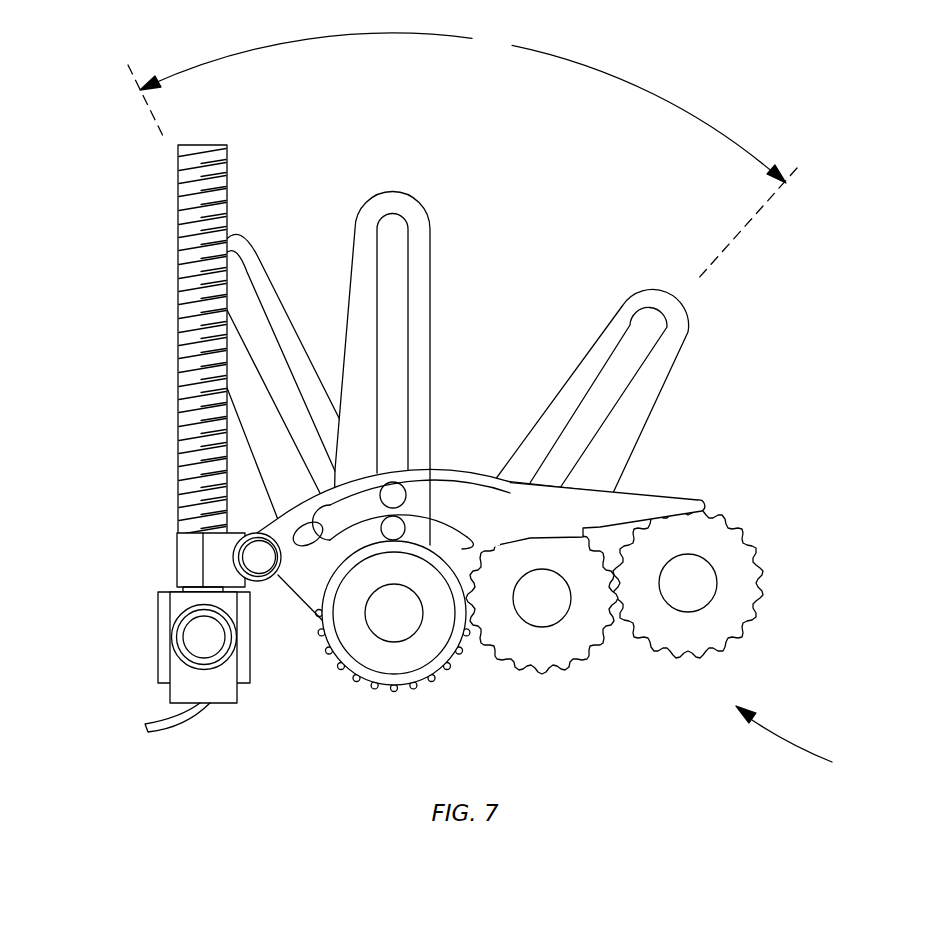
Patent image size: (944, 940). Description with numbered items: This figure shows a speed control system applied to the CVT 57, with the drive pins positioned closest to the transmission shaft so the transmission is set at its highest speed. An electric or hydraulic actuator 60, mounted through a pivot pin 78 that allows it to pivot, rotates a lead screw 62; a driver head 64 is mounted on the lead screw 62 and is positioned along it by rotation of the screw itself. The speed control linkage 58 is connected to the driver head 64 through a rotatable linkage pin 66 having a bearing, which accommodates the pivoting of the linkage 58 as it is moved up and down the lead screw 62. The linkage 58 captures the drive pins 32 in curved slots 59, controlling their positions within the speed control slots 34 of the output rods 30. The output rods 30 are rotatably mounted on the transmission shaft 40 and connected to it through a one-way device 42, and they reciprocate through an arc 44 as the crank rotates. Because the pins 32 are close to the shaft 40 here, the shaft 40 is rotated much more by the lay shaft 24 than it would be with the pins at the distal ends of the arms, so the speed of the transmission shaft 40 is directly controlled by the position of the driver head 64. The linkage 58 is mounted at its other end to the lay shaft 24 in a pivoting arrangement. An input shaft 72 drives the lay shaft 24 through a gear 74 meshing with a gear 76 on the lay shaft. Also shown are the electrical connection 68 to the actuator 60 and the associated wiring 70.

The lay shaft 24 is at (703, 593).
The output rod 30 is at (243, 248).
The drive pin 32 is at (393, 493).
The speed control slot 34 is at (248, 290).
The transmission shaft 40 is at (407, 617).
The one-way device 42 is at (362, 650).
The arc 44 is at (462, 153).
The CVT 57 is at (801, 740).
The speed control linkage 58 is at (603, 507).
The slot 59 is at (448, 497).
The actuator 60 is at (172, 603).
The lead screw 62 is at (183, 403).
The driver head 64 is at (192, 560).
The linkage pin 66 is at (260, 558).
The electrical connection 68 is at (225, 693).
The wiring 70 is at (148, 727).
The input shaft 72 is at (532, 610).
The gear 74 is at (580, 643).
The gear 76 is at (735, 547).
The pivot pin 78 is at (203, 647).